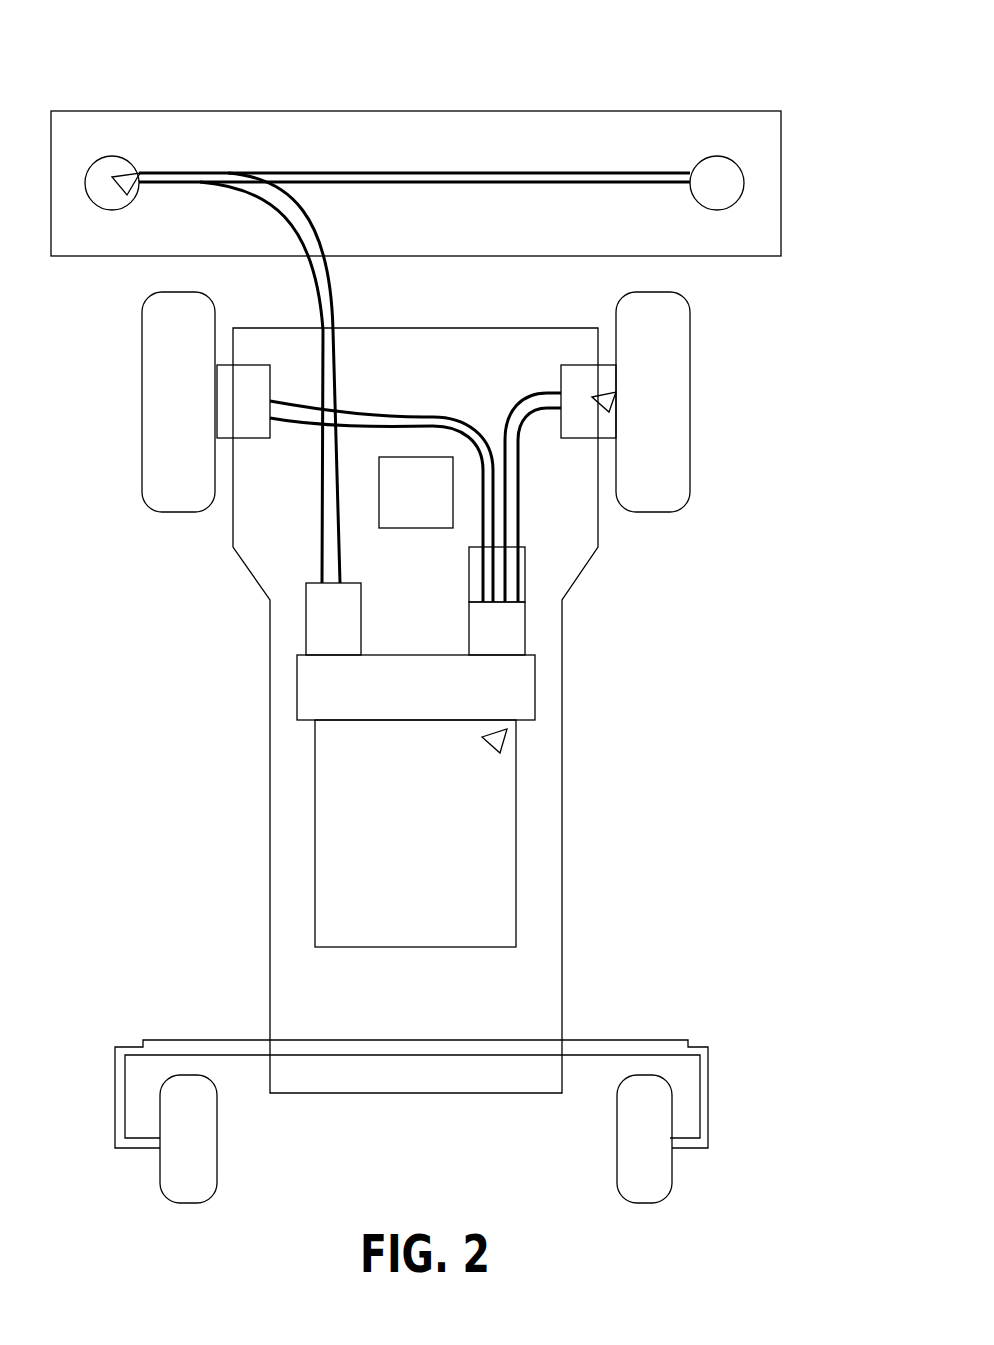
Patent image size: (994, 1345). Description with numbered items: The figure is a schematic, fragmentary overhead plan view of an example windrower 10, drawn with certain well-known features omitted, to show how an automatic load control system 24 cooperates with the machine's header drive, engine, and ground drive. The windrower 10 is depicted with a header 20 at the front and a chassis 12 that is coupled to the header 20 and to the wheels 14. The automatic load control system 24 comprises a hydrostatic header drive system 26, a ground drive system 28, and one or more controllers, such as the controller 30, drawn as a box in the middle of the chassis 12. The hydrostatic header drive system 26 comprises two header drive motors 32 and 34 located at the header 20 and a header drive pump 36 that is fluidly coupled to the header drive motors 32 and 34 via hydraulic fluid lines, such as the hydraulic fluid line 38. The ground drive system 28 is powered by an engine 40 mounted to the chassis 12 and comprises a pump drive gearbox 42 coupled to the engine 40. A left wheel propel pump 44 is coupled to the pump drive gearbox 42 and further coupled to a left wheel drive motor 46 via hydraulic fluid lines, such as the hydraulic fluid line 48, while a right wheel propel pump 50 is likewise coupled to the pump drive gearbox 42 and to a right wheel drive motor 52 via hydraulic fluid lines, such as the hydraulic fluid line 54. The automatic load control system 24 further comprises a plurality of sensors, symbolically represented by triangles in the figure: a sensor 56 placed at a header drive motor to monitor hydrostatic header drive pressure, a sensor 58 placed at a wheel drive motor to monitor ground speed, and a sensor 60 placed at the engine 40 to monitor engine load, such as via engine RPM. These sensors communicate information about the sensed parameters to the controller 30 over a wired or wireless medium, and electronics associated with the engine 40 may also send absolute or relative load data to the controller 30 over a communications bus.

The windrower 10 is at (708, 70).
The chassis 12 is at (565, 930).
The wheels 14 is at (690, 400).
The header 20 is at (782, 187).
The automatic load control system 24 is at (680, 574).
The hydrostatic header drive system 26 is at (288, 92).
The ground drive system 28 is at (233, 738).
The controller 30 is at (416, 492).
The header drive motor 32 is at (113, 210).
The header drive motor 34 is at (714, 210).
The header drive pump 36 is at (306, 620).
The hydraulic fluid line 38 is at (337, 352).
The engine 40 is at (415, 833).
The pump drive gearbox 42 is at (416, 687).
The left wheel propel pump 44 is at (525, 630).
The left wheel drive motor 46 is at (248, 362).
The hydraulic fluid line 48 is at (445, 418).
The right wheel propel pump 50 is at (525, 575).
The right wheel drive motor 52 is at (587, 363).
The hydraulic fluid line 54 is at (510, 413).
The sensor 56 is at (126, 182).
The sensor 58 is at (608, 398).
The sensor 60 is at (497, 745).